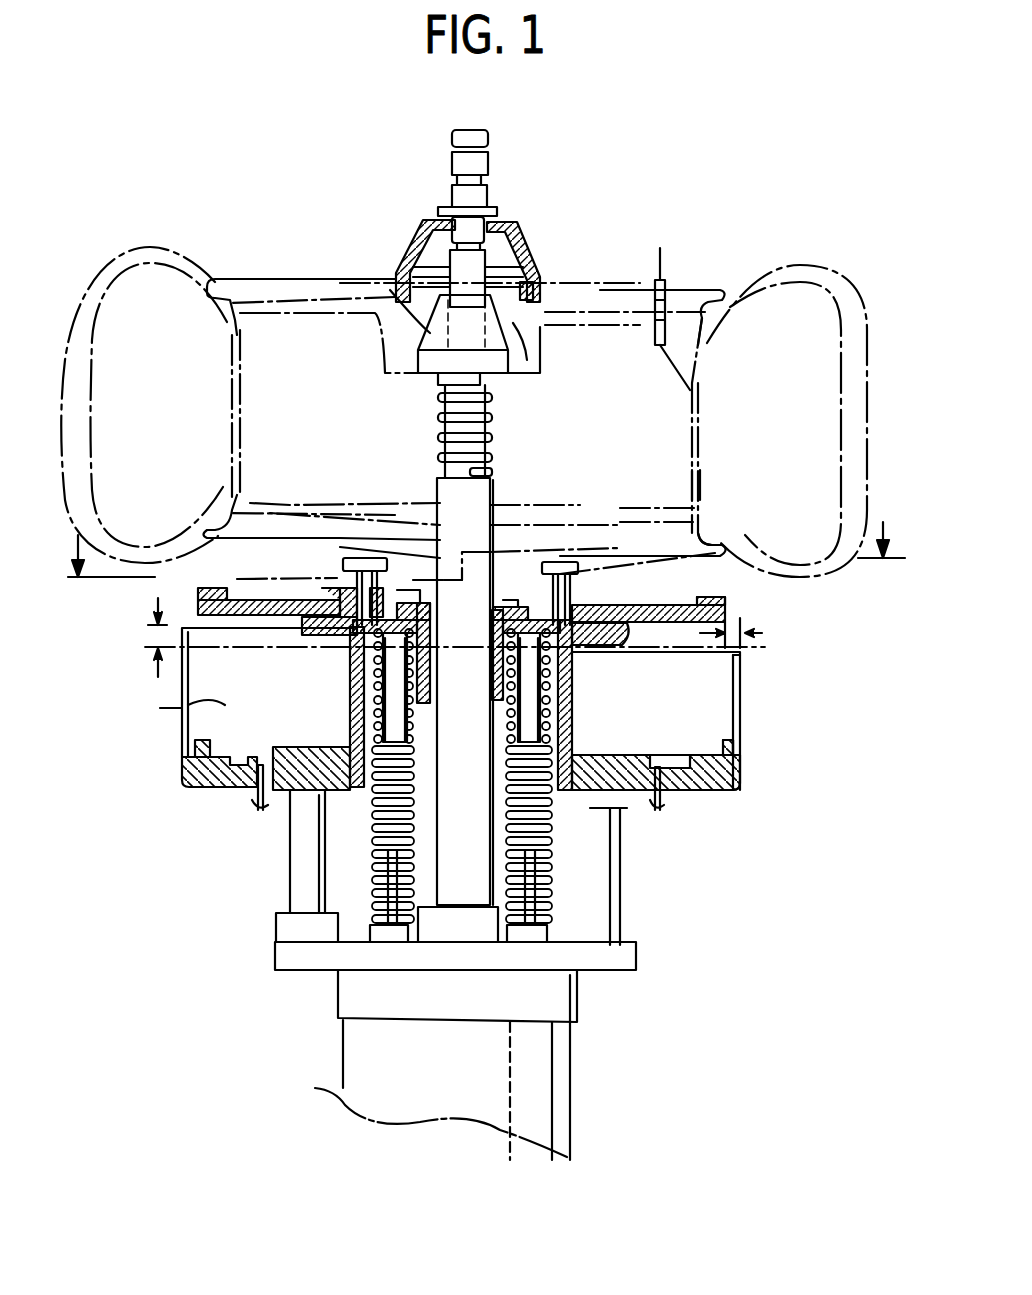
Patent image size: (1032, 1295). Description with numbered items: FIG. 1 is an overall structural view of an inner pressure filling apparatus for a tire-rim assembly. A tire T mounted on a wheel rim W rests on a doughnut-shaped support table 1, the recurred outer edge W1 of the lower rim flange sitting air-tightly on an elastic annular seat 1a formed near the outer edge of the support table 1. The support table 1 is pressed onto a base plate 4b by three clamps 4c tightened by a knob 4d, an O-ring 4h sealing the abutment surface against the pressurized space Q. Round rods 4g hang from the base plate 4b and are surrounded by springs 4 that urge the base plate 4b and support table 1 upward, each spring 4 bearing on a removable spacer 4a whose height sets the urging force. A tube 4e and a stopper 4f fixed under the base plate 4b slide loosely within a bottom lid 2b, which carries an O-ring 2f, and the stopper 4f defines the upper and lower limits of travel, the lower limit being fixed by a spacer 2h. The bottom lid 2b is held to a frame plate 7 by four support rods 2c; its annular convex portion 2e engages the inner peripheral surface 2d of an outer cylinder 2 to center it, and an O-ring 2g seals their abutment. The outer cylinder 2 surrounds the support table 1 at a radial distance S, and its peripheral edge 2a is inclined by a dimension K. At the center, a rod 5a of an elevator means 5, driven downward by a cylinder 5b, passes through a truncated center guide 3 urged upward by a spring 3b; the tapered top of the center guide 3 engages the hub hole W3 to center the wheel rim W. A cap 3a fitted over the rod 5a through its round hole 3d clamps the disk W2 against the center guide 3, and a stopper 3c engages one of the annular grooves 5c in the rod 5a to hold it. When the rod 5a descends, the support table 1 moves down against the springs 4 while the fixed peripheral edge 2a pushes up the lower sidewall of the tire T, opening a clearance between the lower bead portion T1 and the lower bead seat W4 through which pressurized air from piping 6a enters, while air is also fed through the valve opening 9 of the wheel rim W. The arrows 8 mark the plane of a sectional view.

The support table 1 is at (630, 605).
The annular seat 1a is at (728, 600).
The outer cylinder 2 is at (742, 703).
The peripheral edge 2a is at (742, 660).
The bottom lid 2b is at (660, 812).
The support rods 2c is at (290, 870).
The inner peripheral surface 2d is at (730, 755).
The annular convex portion 2e is at (674, 795).
The O-ring 2f is at (577, 760).
The O-ring 2g is at (722, 792).
The spacer 2h is at (277, 925).
The center guide 3 is at (430, 333).
The cap 3a is at (516, 232).
The spring 3b is at (440, 449).
The stopper 3c is at (492, 212).
The round hole 3d is at (447, 212).
The spring 4 is at (372, 840).
The spacer 4a is at (380, 940).
The base plate 4b is at (600, 642).
The clamp 4c is at (577, 598).
The knob 4d is at (565, 560).
The tube 4e is at (577, 700).
The stopper 4f is at (632, 810).
The round rods 4g is at (380, 700).
The O-ring 4h is at (620, 628).
The elevator means 5 is at (628, 1046).
The rod 5a is at (344, 582).
The cylinder 5b is at (575, 1080).
The annular grooves 5c is at (490, 170).
The piping 6a is at (648, 792).
The frame plate 7 is at (276, 956).
The section line 8 is at (478, 549).
The valve opening 9 is at (669, 302).
The tire T is at (795, 262).
The lower bead portion T1 is at (702, 498).
The wheel rim W is at (700, 415).
The recurred outer edge W1 is at (752, 577).
The disk W2 is at (578, 300).
The hub hole W3 is at (528, 347).
The lower bead seat W4 is at (718, 522).
The dimension K is at (145, 637).
The distance S is at (745, 632).
The space Q is at (182, 706).